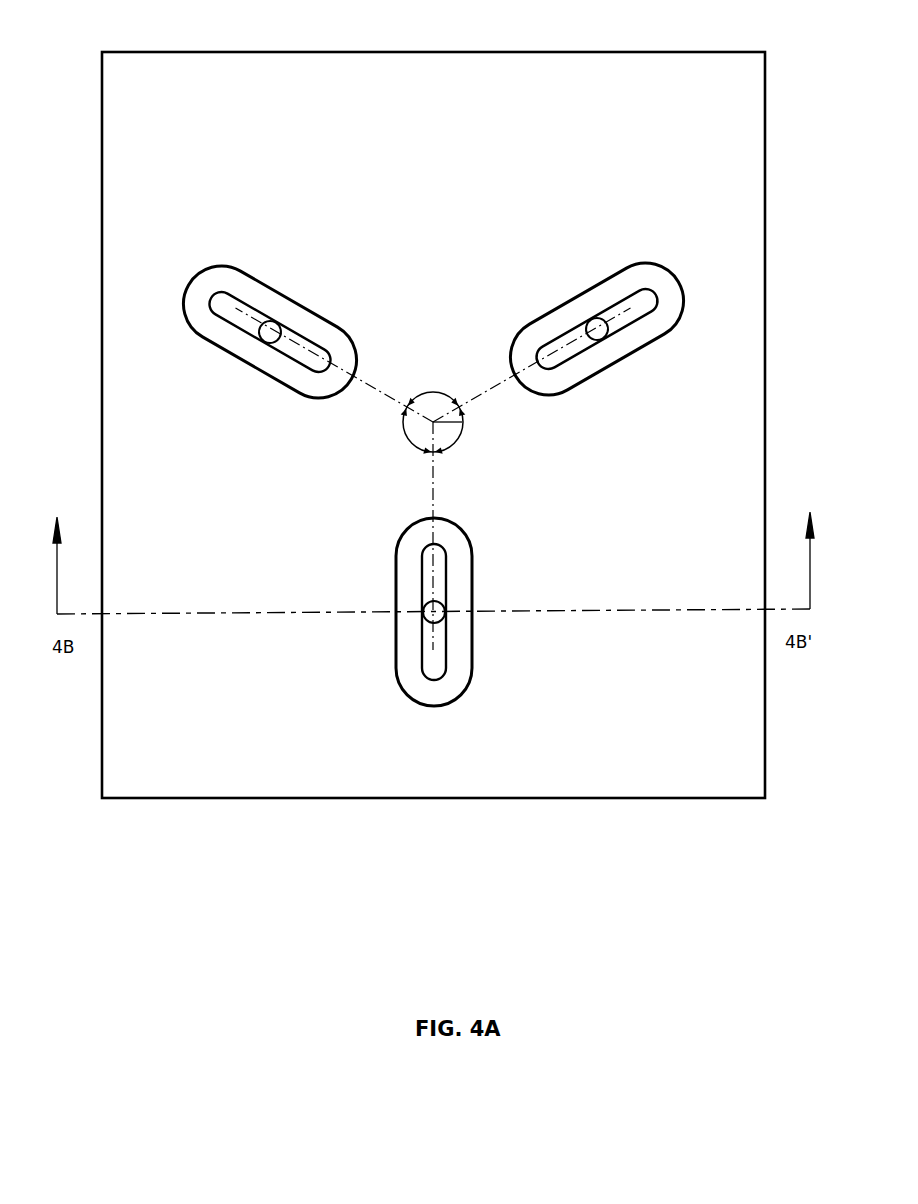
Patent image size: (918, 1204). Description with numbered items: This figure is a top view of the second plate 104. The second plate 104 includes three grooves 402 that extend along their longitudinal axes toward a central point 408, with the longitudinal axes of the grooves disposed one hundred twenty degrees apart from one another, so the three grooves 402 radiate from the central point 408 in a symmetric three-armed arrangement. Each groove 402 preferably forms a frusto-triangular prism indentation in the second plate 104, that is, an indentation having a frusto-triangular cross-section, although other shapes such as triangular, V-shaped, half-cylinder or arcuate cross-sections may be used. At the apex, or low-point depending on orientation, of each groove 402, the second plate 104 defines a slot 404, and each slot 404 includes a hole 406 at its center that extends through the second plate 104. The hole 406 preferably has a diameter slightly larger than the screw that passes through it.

The second plate 104 is at (254, 51).
The groove 402 is at (403, 695).
The slot 404 is at (433, 683).
The hole 406 is at (446, 618).
The central point 408 is at (462, 420).